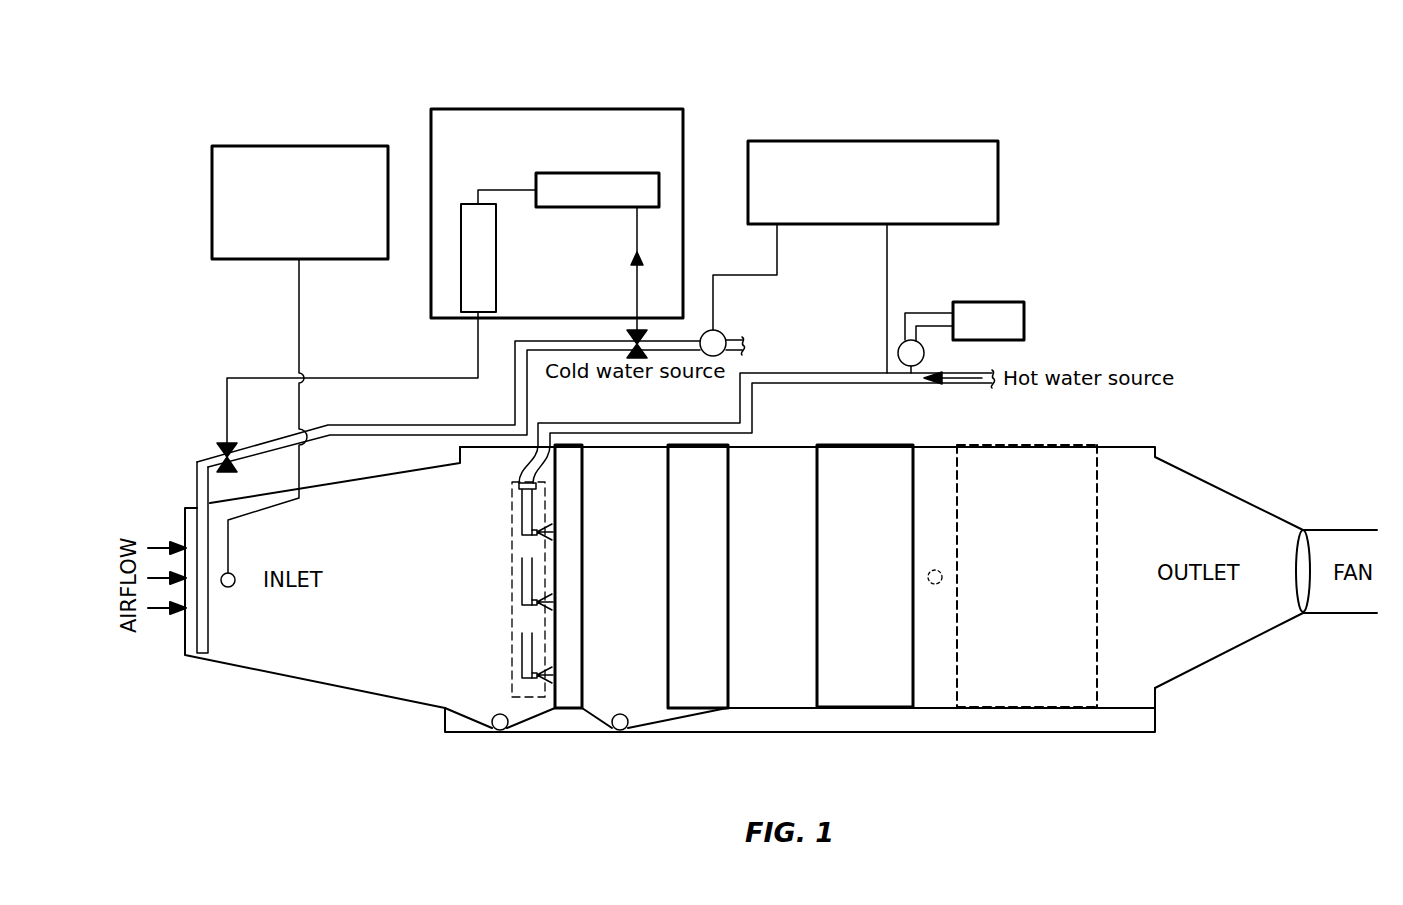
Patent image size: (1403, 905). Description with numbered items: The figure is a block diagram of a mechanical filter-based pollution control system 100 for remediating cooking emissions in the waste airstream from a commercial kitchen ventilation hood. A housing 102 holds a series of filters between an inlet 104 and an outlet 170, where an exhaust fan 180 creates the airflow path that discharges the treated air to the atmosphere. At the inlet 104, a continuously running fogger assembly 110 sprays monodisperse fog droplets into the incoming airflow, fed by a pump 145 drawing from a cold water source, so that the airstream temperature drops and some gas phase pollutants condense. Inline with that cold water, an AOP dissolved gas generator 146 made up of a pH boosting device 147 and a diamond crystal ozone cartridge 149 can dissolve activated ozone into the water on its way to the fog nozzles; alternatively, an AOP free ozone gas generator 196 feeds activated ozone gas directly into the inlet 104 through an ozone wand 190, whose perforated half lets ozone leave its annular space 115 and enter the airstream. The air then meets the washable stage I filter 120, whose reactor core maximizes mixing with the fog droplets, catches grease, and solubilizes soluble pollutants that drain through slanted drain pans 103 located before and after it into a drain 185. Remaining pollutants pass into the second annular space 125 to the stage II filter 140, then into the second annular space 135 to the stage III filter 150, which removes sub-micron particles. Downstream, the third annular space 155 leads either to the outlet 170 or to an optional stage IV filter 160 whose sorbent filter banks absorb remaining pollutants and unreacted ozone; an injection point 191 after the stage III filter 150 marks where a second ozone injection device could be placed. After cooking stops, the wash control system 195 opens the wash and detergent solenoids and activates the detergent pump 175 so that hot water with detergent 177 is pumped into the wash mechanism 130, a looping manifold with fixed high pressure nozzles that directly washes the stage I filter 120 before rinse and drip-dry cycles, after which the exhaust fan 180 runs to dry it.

The pollution control system 100 is at (240, 334).
The housing 102 is at (815, 735).
The slanted drain pans 103 is at (452, 740).
The inlet 104 is at (262, 661).
The fogger assembly 110 is at (210, 615).
The annular space 115 is at (430, 627).
The stage I filter 120 is at (568, 488).
The second annular space 125 is at (644, 695).
The wash mechanism 130 is at (510, 533).
The second annular space 135 is at (787, 665).
The stage II filter 140 is at (696, 690).
The pump 145 is at (722, 334).
The AOP dissolved gas generator 146 is at (636, 109).
The pH boosting device 147 is at (556, 208).
The diamond crystal ozone filter cartridge 149 is at (497, 272).
The stage III filter 150 is at (835, 513).
The third annular space 155 is at (955, 498).
The stage IV filter 160 is at (1042, 712).
The outlet 170 is at (1205, 645).
The detergent pump 175 is at (924, 353).
The detergent 177 is at (1000, 302).
The exhaust fan 180 is at (1352, 540).
The drain 185 is at (617, 731).
The ozone wand 190 is at (233, 573).
The injection point 191 is at (935, 585).
The wash control system 195 is at (985, 160).
The AOP free ozone gas generator 196 is at (300, 146).